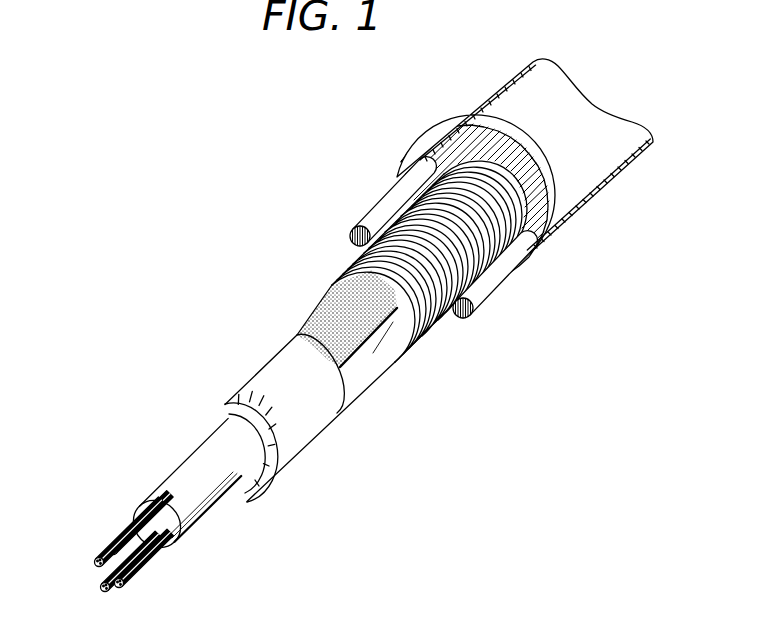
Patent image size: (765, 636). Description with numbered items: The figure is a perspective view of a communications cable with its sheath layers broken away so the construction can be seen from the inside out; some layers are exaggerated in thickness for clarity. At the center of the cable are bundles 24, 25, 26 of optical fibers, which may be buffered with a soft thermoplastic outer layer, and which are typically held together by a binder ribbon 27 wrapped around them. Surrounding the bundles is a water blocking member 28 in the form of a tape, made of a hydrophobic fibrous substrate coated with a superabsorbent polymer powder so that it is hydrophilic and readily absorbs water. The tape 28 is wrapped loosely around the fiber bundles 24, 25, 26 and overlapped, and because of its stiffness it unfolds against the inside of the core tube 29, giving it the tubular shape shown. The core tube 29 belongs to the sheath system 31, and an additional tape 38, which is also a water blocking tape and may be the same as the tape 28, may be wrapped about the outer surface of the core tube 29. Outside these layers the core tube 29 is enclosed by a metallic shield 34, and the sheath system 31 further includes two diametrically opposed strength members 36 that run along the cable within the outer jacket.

The bundle of optical fibers 24 is at (95, 558).
The bundle of optical fibers 25 is at (98, 588).
The bundle of optical fibers 26 is at (120, 588).
The binder ribbon 27 is at (126, 537).
The water blocking member 28 is at (218, 519).
The core tube 29 is at (296, 455).
The sheath system 31 is at (230, 357).
The metallic shield 34 is at (426, 334).
The strength members 36 is at (383, 199).
The additional tape 38 is at (307, 313).